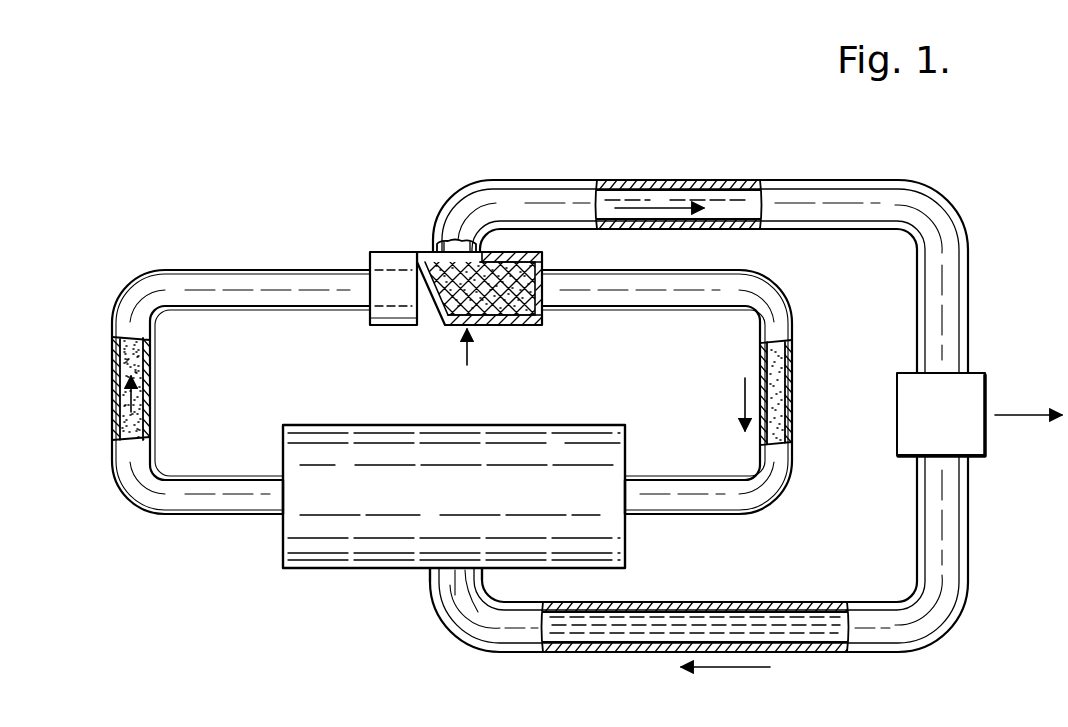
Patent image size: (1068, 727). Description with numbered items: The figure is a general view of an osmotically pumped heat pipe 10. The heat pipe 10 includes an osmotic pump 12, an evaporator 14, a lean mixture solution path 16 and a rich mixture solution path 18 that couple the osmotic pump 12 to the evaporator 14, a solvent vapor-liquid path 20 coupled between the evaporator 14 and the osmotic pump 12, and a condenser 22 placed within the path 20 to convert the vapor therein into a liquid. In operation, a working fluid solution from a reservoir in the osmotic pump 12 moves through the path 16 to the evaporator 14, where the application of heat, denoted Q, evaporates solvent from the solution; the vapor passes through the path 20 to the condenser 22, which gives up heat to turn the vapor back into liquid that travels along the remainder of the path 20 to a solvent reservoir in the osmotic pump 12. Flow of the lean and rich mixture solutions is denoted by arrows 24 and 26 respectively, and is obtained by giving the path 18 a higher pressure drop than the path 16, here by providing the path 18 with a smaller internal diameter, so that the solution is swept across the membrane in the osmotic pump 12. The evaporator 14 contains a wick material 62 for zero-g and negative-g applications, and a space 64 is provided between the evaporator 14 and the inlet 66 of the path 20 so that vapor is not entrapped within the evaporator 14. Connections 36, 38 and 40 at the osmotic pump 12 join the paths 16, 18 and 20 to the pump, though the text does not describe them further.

The osmotically pumped heat pipe 10 is at (237, 111).
The osmotic pump 12 is at (561, 425).
The evaporator 14 is at (510, 326).
The lean mixture solution path 16 is at (150, 357).
The rich mixture solution path 18 is at (757, 324).
The solvent vapor-liquid path 20 is at (968, 318).
The condenser 22 is at (985, 452).
The arrow denoting lean mixture solution flow 24 is at (138, 401).
The arrow denoting rich mixture solution flow 26 is at (744, 380).
The outlet 36 is at (630, 480).
The inlet 38 is at (283, 472).
The return conduit 40 is at (432, 576).
The wick material 62 is at (534, 285).
The space 64 is at (425, 256).
The inlet of solvent vapor-liquid path 66 is at (446, 250).